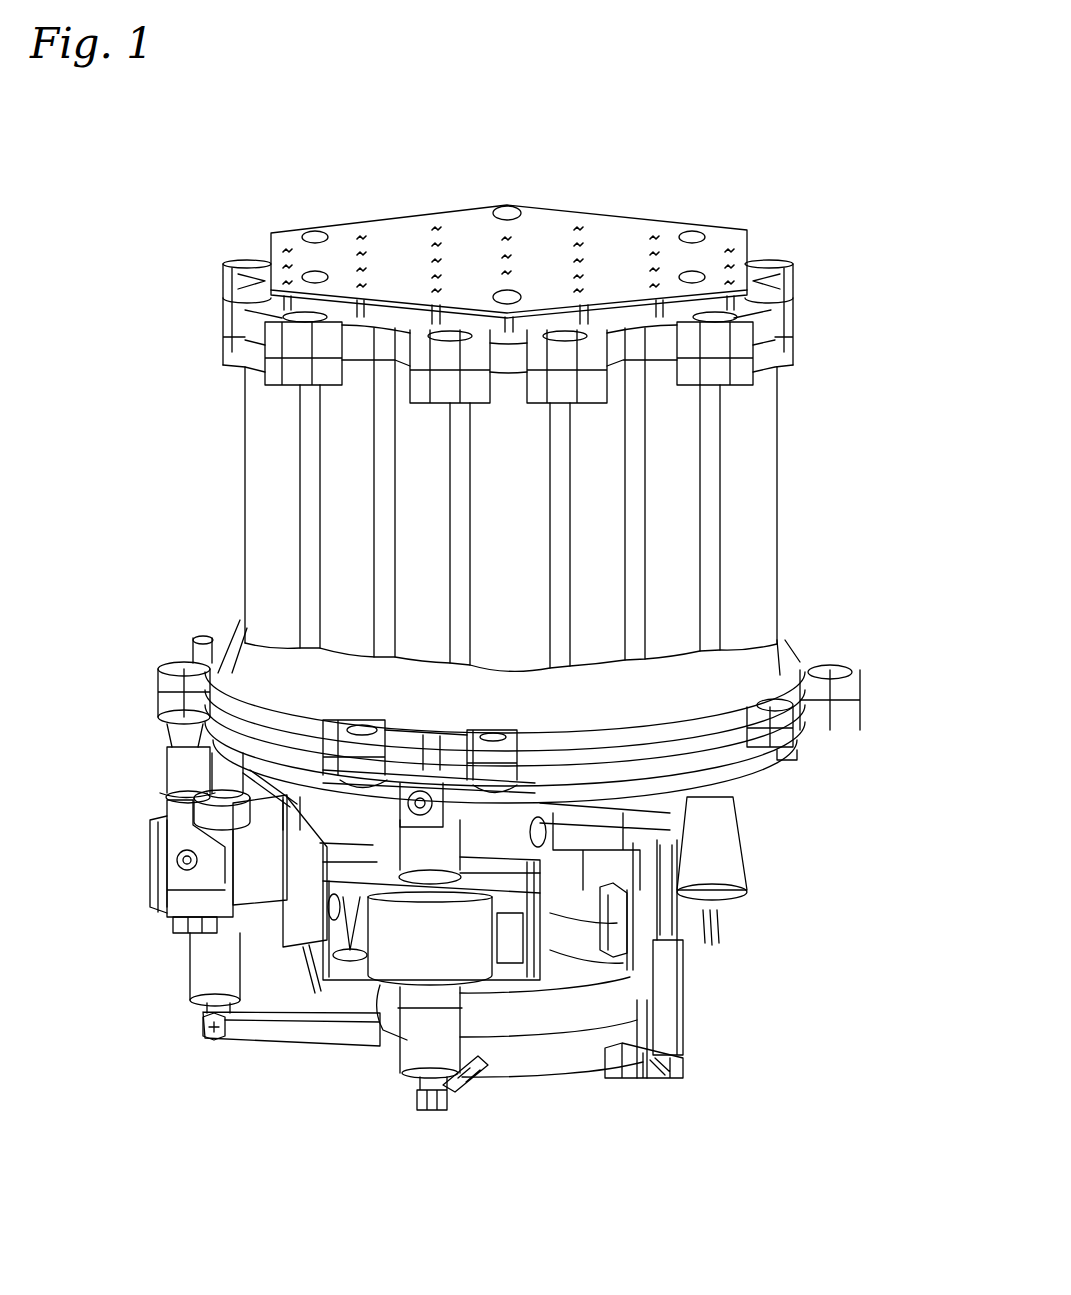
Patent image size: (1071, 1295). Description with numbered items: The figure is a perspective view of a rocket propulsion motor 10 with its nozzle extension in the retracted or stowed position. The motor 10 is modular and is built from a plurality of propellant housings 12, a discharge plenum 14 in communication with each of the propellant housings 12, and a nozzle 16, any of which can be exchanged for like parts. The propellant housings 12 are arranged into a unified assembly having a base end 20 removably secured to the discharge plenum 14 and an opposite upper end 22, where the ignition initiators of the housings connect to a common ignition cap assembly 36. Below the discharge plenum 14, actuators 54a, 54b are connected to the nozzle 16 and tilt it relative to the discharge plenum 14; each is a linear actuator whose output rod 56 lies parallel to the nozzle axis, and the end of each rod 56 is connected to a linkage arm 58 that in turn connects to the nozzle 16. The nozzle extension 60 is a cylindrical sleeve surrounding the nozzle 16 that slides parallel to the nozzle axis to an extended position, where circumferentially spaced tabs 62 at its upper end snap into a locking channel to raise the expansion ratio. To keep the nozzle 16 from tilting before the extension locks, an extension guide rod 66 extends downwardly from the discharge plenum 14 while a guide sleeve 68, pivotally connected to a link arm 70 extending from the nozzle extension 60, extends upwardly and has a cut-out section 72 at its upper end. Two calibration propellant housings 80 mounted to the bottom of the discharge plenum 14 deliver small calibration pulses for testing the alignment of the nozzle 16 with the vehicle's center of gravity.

The rocket propulsion motor 10 is at (843, 197).
The propellant housing 12 is at (240, 453).
The discharge plenum 14 is at (795, 778).
The nozzle 16 is at (550, 1080).
The base end 20 is at (795, 650).
The upper end 22 is at (800, 350).
The common ignition cap assembly 36 is at (620, 228).
The actuator 54a is at (415, 1078).
The actuator 54b is at (218, 970).
The output rod 56 is at (210, 1015).
The linkage arm 58 is at (262, 1035).
The nozzle extension 60 is at (385, 1040).
The tab 62 is at (640, 898).
The extension guide rod 66 is at (670, 918).
The guide sleeve 68 is at (677, 1025).
The link arm 70 is at (622, 1067).
The cut-out section 72 is at (680, 957).
The calibration propellant housing 80 is at (205, 787).